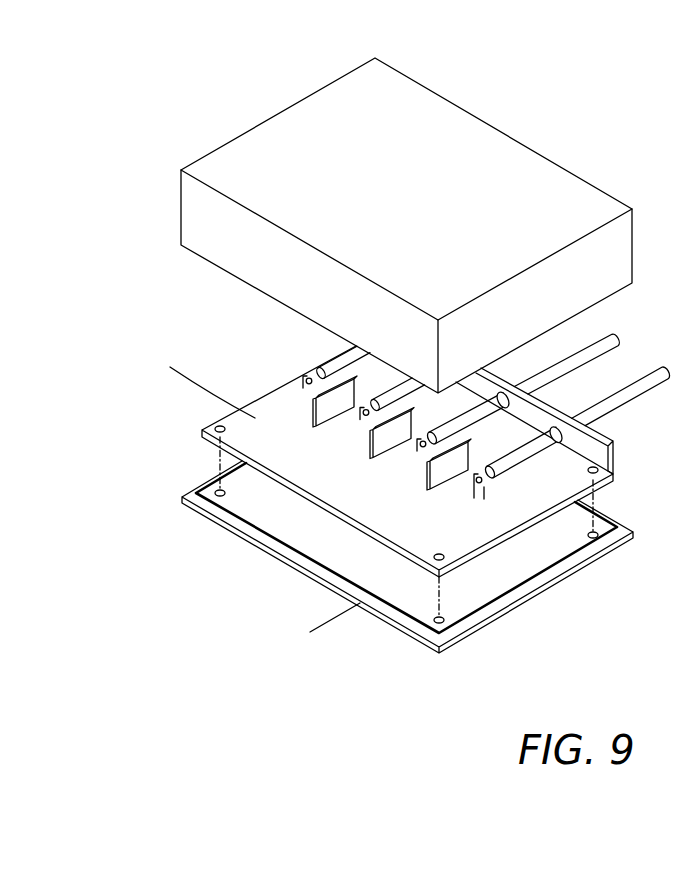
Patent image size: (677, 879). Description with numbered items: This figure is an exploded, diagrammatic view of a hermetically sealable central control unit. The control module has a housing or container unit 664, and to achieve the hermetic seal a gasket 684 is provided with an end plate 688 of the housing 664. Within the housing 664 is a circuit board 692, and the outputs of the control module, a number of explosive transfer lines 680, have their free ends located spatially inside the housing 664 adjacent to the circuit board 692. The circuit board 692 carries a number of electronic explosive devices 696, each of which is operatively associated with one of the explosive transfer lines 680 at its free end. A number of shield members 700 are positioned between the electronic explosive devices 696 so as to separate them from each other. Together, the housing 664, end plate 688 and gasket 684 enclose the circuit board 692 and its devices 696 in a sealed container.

The housing 664 is at (513, 165).
The explosive transfer lines 680 is at (632, 383).
The gasket 684 is at (327, 618).
The end plate 688 is at (270, 512).
The circuit board 692 is at (253, 451).
The electronic explosive devices 696 is at (417, 440).
The shield members 700 is at (441, 476).